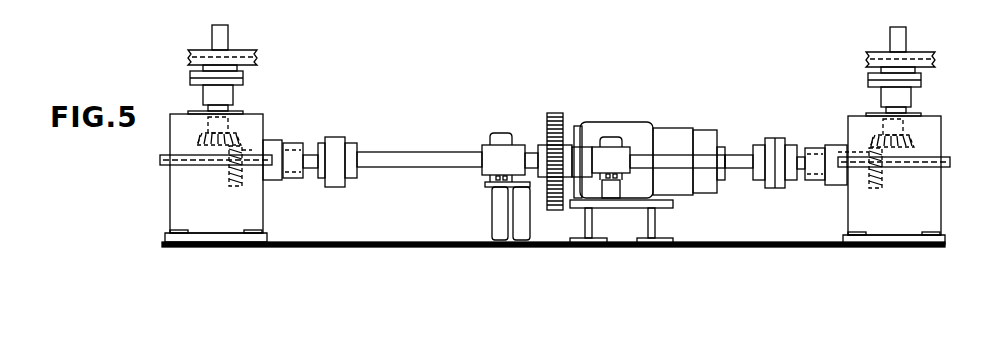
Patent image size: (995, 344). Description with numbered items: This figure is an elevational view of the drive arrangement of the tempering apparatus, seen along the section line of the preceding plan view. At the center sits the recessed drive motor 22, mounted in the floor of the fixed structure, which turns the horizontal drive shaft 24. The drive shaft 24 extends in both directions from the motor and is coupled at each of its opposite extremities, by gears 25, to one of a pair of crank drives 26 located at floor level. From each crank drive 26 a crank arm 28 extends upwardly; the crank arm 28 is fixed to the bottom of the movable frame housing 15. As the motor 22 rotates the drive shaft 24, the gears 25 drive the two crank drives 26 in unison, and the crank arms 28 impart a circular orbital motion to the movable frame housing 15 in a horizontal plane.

The crank arm 28 is at (228, 32).
The movable frame housing 15 is at (260, 55).
The crank drive 26 is at (243, 78).
The gears 25 is at (232, 136).
The drive shaft 24 is at (410, 152).
The drive motor 22 is at (645, 122).